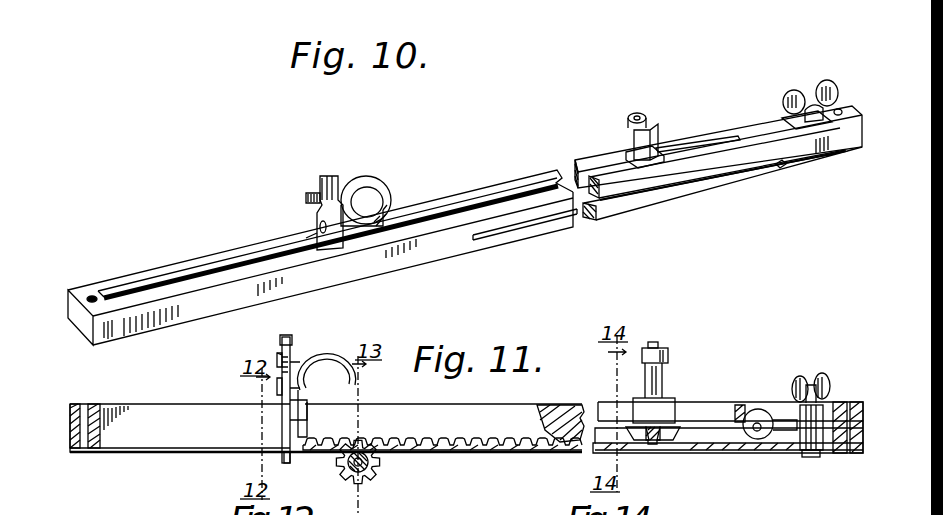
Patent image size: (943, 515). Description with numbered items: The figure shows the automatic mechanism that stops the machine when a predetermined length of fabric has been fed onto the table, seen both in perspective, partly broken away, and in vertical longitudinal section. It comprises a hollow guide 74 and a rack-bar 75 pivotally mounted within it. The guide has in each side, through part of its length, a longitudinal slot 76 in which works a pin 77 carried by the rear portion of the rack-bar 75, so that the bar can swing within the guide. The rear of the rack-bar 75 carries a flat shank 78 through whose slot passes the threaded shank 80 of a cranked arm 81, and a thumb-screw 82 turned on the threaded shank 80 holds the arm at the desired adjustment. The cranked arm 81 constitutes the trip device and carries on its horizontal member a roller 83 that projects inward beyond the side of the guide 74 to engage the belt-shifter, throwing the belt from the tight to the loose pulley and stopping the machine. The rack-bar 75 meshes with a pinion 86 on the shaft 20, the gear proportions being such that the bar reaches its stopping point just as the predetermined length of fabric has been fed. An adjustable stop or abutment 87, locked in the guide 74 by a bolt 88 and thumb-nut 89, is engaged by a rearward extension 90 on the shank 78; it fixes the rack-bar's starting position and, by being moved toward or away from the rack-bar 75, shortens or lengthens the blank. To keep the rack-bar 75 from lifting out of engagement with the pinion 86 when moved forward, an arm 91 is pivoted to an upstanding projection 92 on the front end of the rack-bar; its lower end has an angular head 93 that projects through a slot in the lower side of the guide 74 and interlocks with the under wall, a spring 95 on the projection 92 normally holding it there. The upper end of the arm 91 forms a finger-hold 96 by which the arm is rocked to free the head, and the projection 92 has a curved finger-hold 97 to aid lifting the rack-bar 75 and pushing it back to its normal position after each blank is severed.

In FIG. 11, the shaft 20 is at (378, 466).
In FIG. 10, the hollow guide 74 is at (392, 264).
In FIG. 11, the hollow guide 74 is at (156, 406).
In FIG. 11, the rack-bar 75 is at (508, 412).
In FIG. 10, the longitudinal slot 76 is at (706, 146).
In FIG. 10, the pin 77 is at (779, 164).
In FIG. 10, the flat shank 78 is at (828, 142).
In FIG. 11, the flat shank 78 is at (703, 414).
In FIG. 11, the threaded shank 80 is at (656, 442).
In FIG. 10, the cranked arm 81 is at (652, 140).
In FIG. 11, the cranked arm 81 is at (657, 392).
In FIG. 11, the thumb-screw 82 is at (668, 444).
In FIG. 10, the roller 83 is at (643, 120).
In FIG. 11, the roller 83 is at (665, 353).
In FIG. 11, the pinion 86 is at (347, 465).
In FIG. 11, the adjustable stop or abutment 87 is at (808, 440).
In FIG. 11, the bolt 88 is at (812, 458).
In FIG. 10, the thumb-nut 89 is at (822, 94).
In FIG. 11, the thumb-nut 89 is at (820, 378).
In FIG. 11, the rearward extension 90 is at (782, 410).
In FIG. 11, the arm 91 is at (282, 418).
In FIG. 11, the upstanding projection 92 is at (327, 395).
In FIG. 11, the angular head 93 is at (284, 453).
In FIG. 10, the spring 95 is at (320, 198).
In FIG. 11, the spring 95 is at (280, 356).
In FIG. 10, the finger-hold 96 is at (334, 178).
In FIG. 11, the finger-hold 96 is at (290, 338).
In FIG. 10, the curved finger-hold 97 is at (372, 190).
In FIG. 11, the curved finger-hold 97 is at (334, 362).